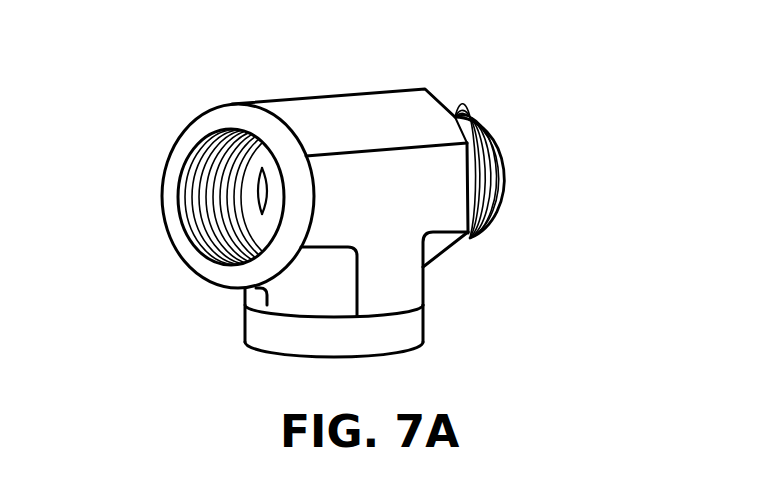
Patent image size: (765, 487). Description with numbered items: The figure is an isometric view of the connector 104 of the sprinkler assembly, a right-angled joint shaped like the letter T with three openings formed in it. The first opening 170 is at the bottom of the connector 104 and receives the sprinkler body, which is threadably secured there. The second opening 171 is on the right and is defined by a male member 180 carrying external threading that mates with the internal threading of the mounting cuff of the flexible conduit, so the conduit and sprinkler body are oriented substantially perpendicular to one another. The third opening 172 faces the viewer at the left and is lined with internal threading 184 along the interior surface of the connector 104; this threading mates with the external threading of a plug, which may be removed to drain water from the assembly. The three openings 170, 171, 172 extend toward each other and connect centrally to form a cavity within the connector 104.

The connector 104 is at (373, 103).
The first opening 170 is at (343, 364).
The second opening 171 is at (518, 160).
The third opening 172 is at (170, 193).
The male member 180 is at (492, 113).
The internal threading 184 is at (198, 148).